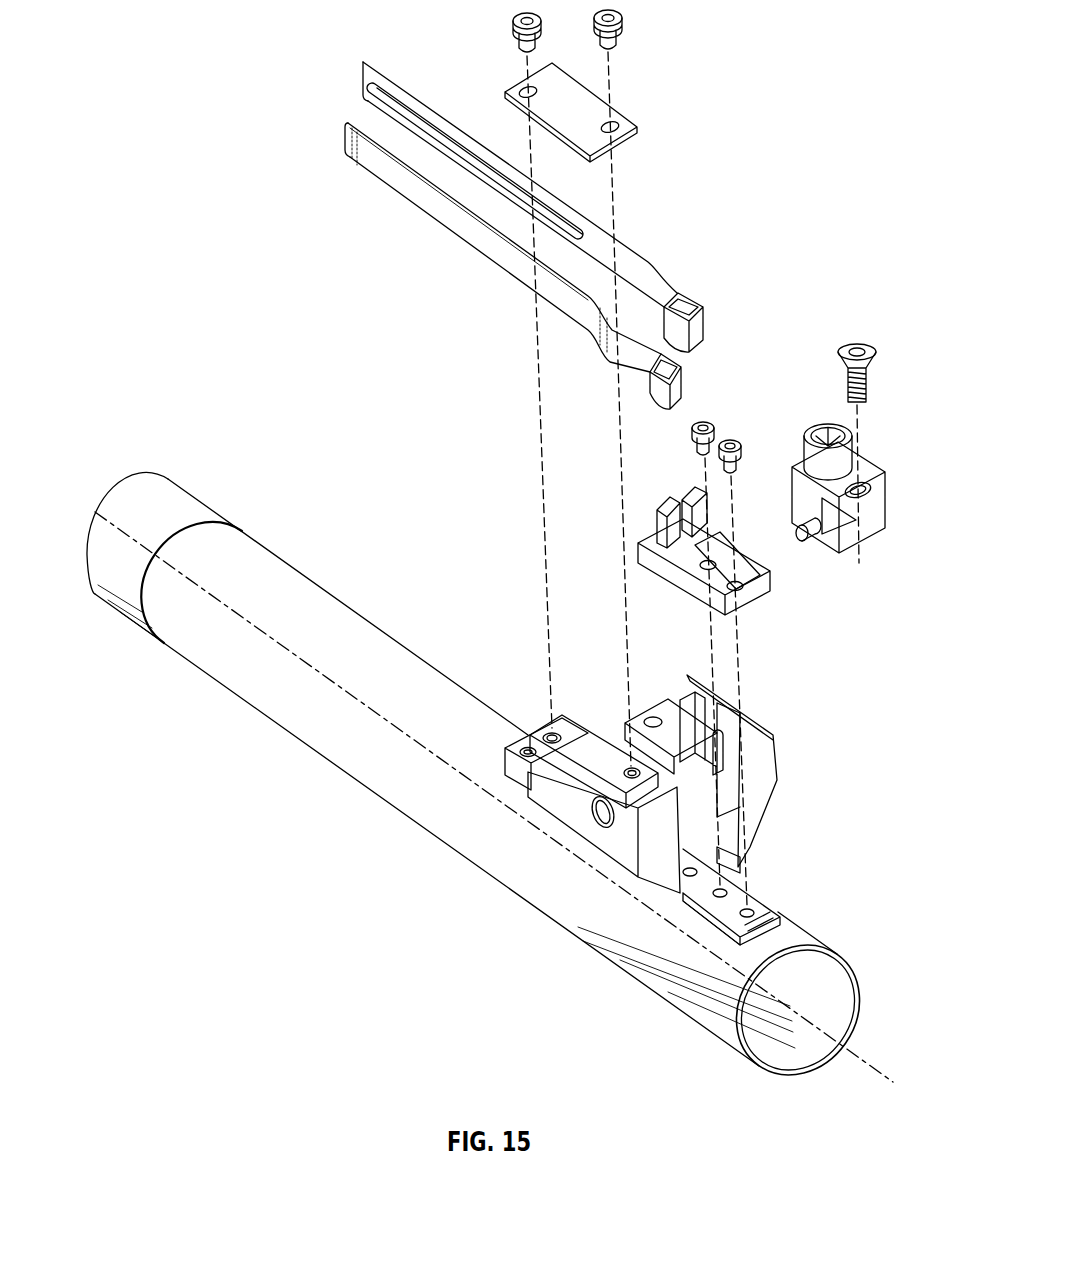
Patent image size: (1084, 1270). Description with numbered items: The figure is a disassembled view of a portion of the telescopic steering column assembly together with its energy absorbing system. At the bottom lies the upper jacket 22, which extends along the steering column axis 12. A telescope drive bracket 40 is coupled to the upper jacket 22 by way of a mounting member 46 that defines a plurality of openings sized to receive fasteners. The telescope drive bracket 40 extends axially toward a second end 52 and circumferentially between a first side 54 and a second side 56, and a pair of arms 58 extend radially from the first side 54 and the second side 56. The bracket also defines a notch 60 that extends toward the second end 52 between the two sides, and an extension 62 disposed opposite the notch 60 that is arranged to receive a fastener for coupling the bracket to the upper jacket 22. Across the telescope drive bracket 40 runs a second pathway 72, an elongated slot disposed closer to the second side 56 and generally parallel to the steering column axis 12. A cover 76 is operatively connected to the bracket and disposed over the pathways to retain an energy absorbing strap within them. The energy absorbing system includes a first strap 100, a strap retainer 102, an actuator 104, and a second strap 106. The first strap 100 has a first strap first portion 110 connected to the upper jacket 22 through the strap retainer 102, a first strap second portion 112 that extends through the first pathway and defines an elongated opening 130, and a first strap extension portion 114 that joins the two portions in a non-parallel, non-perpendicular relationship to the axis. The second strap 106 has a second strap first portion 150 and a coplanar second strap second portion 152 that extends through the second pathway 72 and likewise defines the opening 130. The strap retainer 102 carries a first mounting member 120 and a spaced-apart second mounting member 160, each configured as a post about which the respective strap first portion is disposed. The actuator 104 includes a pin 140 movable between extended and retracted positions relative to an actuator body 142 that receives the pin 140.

The steering column axis 12 is at (877, 1082).
The upper jacket 22 is at (215, 697).
The telescope drive bracket 40 is at (633, 839).
The mounting member 46 is at (780, 932).
The second end 52 is at (637, 707).
The first side 54 is at (723, 870).
The second side 56 is at (683, 900).
The arms 58 is at (627, 768).
The notch 60 is at (747, 877).
The extension 62 is at (495, 754).
The second pathway 72 is at (553, 717).
The cover 76 is at (644, 128).
The first strap 100 is at (517, 251).
The strap retainer 102 is at (696, 663).
The actuator 104 is at (836, 454).
The second strap 106 is at (533, 190).
The first strap first portion 110 is at (684, 384).
The first strap second portion 112 is at (392, 196).
The first strap extension portion 114 is at (590, 340).
The first mounting member 120 is at (660, 497).
The opening 130 is at (391, 92).
The pin 140 is at (790, 530).
The actuator body 142 is at (863, 517).
The second strap first portion 150 is at (698, 292).
The second strap second portion 152 is at (437, 107).
The second mounting member 160 is at (683, 484).